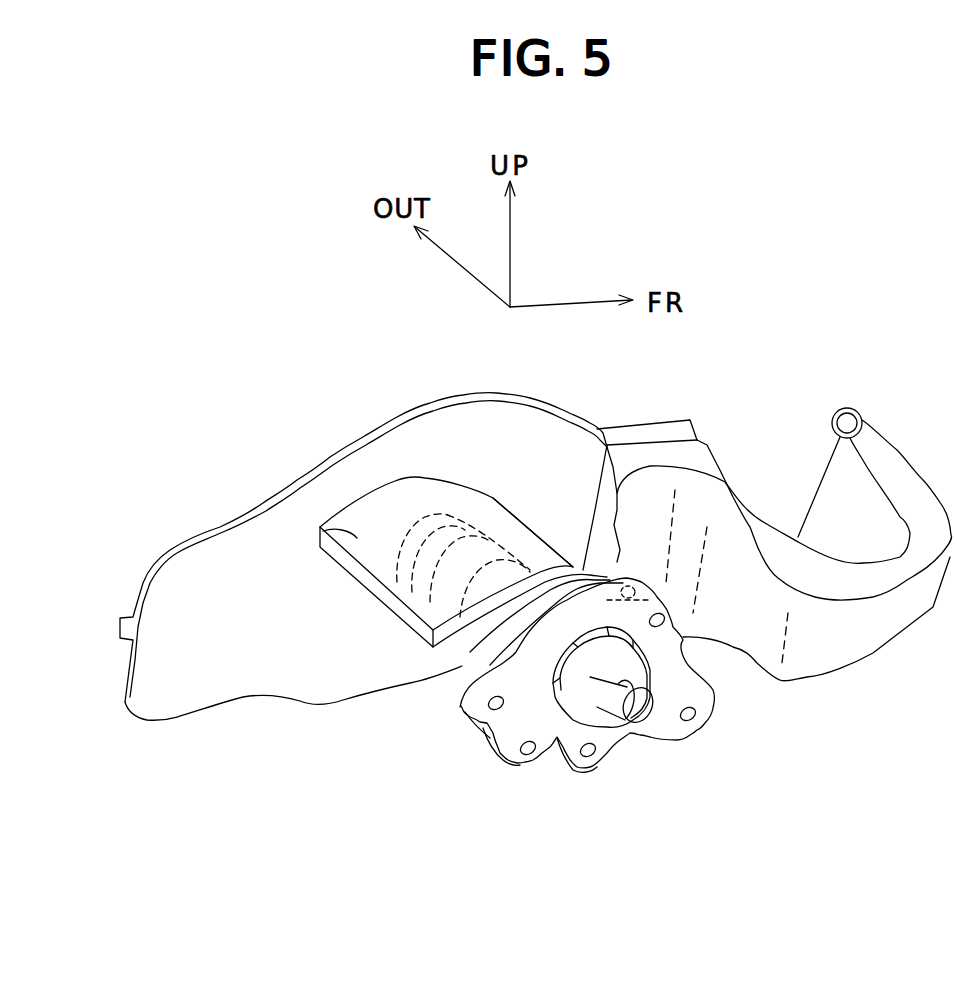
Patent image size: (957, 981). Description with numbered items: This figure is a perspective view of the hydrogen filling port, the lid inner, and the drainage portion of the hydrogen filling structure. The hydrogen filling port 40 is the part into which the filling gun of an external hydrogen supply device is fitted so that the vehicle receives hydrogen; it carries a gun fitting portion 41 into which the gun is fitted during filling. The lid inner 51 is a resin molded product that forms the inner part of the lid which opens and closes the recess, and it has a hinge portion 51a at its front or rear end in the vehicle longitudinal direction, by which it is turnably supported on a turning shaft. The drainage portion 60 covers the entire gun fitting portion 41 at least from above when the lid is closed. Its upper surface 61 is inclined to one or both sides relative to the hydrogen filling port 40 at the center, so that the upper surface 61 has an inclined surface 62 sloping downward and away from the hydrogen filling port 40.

The hydrogen filling port 40 is at (598, 711).
The gun fitting portion 41 is at (430, 605).
The lid inner 51 is at (297, 477).
The hinge portion 51a is at (887, 397).
The drainage portion 60 is at (440, 552).
The upper surface 61 is at (455, 503).
The inclined surface 62 is at (500, 527).